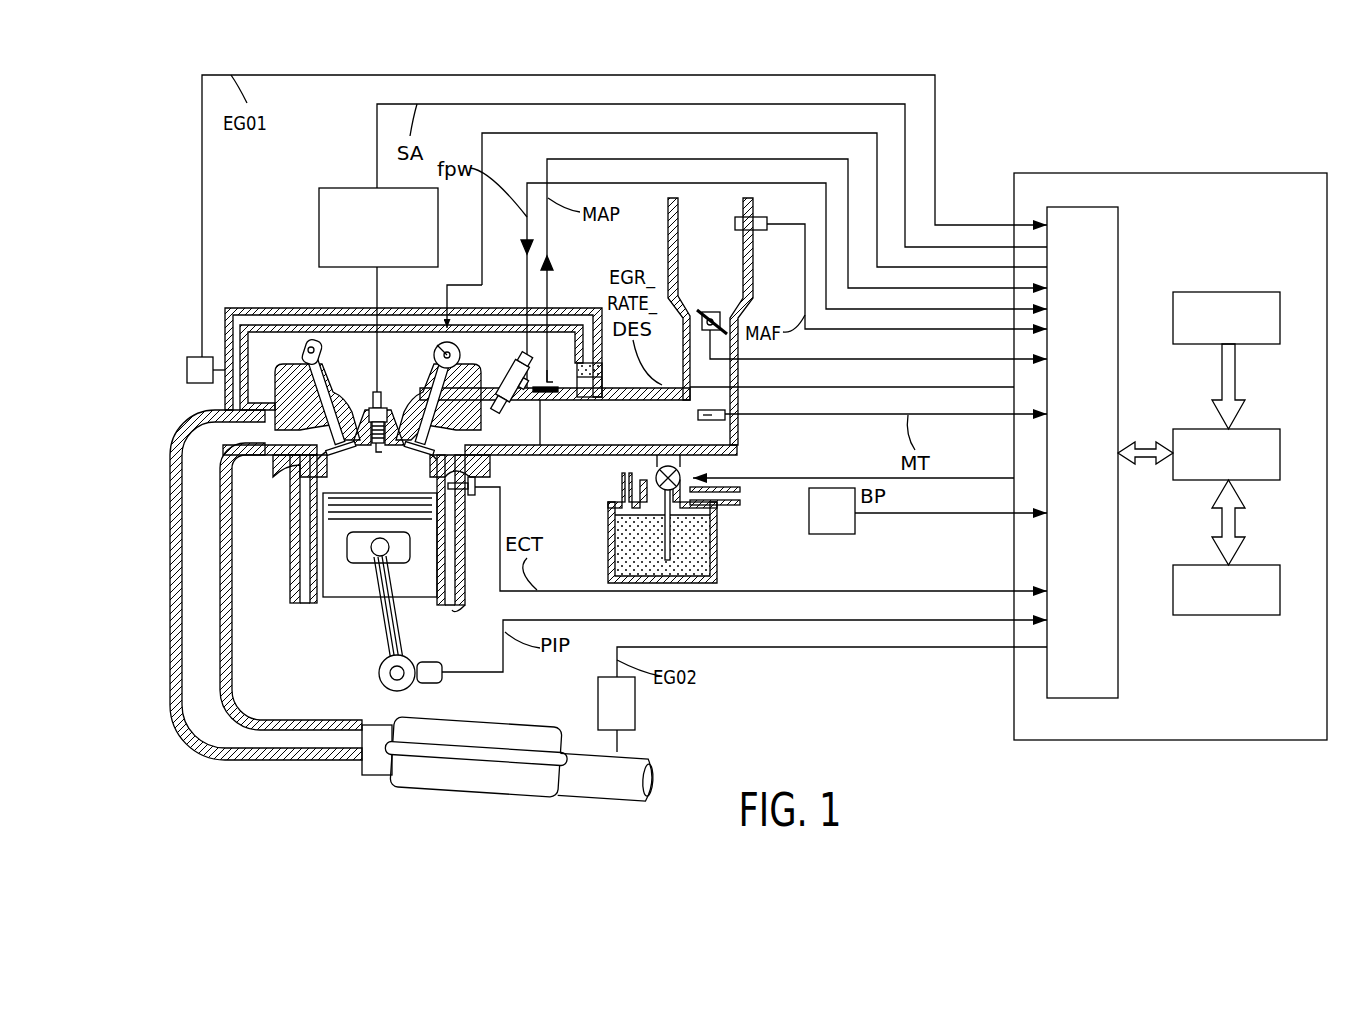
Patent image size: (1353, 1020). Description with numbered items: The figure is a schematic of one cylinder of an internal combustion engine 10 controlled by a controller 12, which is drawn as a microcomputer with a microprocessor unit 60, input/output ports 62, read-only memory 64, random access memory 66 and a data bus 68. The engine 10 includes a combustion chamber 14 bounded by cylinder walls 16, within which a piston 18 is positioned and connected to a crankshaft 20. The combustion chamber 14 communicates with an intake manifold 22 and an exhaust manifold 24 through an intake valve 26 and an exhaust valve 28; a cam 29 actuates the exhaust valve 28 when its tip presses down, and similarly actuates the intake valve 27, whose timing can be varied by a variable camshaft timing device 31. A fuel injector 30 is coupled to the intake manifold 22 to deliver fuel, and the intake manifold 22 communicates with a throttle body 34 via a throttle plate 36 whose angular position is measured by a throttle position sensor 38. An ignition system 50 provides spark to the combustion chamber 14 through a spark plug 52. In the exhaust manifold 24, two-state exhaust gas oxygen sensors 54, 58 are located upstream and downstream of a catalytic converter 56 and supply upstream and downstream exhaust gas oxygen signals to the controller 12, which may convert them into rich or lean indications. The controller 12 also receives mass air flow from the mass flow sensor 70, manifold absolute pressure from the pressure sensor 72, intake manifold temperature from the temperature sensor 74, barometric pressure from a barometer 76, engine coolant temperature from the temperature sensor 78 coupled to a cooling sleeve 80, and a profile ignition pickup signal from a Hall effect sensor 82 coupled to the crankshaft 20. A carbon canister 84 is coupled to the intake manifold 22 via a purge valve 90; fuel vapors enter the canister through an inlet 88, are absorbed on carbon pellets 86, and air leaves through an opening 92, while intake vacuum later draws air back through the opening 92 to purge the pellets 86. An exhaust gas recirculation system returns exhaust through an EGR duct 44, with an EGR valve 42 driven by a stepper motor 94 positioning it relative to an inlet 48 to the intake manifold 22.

The internal combustion engine 10 is at (990, 112).
The controller 12 is at (1162, 173).
The combustion chamber 14 is at (323, 505).
The cylinder walls 16 is at (319, 585).
The piston 18 is at (340, 563).
The crankshaft 20 is at (379, 674).
The intake manifold 22 is at (553, 432).
The exhaust manifold 24 is at (170, 438).
The intake valve 26 is at (432, 440).
The intake valve 27 is at (446, 343).
The exhaust valve 28 is at (333, 440).
The cam 29 is at (302, 330).
The fuel injector 30 is at (501, 368).
The variable camshaft timing device 31 is at (437, 345).
The throttle body 34 is at (700, 238).
The throttle plate 36 is at (700, 312).
The throttle position sensor 38 is at (714, 314).
The EGR valve 42 is at (580, 383).
The EGR duct 44 is at (327, 308).
The inlet 48 is at (590, 397).
The ignition system 50 is at (352, 188).
The spark plug 52 is at (377, 395).
The exhaust gas oxygen sensor 54 is at (187, 370).
The catalytic converter 56 is at (467, 797).
The exhaust gas oxygen sensor 58 is at (598, 700).
The microprocessor unit 60 is at (1267, 429).
The input/output ports 62 is at (1118, 255).
The read-only memory 64 is at (1228, 292).
The random access memory 66 is at (1230, 615).
The data bus 68 is at (1140, 453).
The mass flow sensor 70 is at (757, 231).
The pressure sensor 72 is at (541, 403).
The temperature sensor 74 is at (725, 417).
The barometer 76 is at (855, 525).
The temperature sensor 78 is at (475, 495).
The cooling sleeve 80 is at (452, 610).
The Hall effect sensor 82 is at (440, 682).
The carbon canister 84 is at (633, 542).
The carbon pellets 86 is at (618, 532).
The inlet 88 is at (622, 487).
The purge valve 90 is at (658, 468).
The opening 92 is at (740, 496).
The stepper motor 94 is at (585, 362).